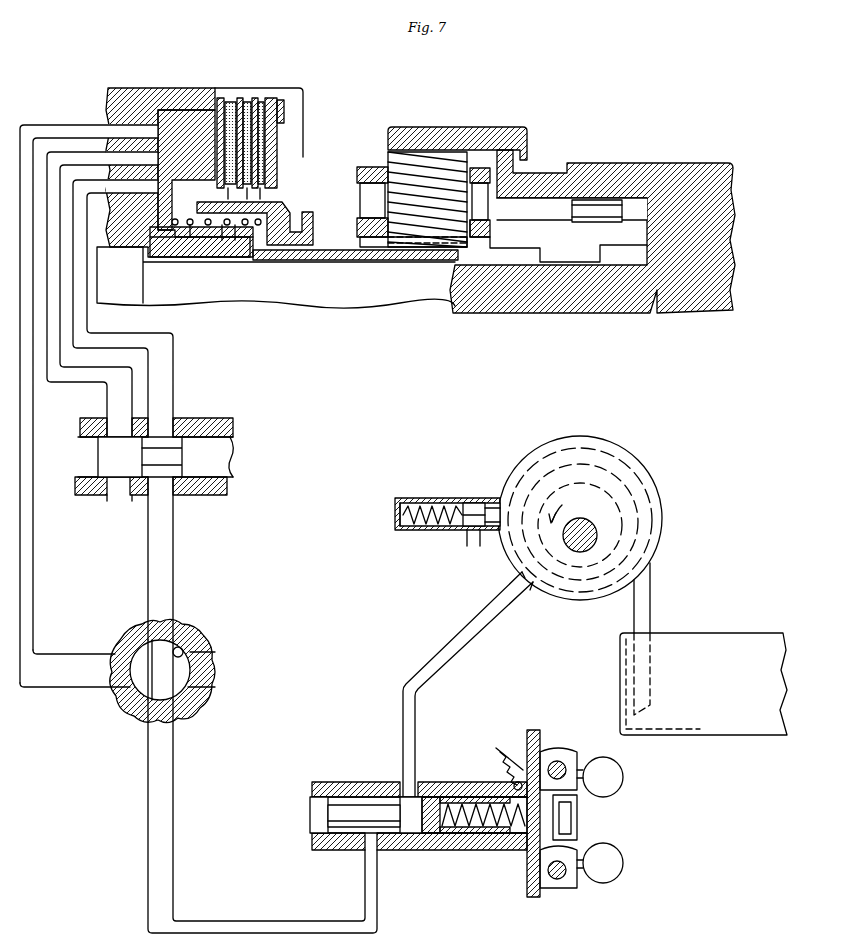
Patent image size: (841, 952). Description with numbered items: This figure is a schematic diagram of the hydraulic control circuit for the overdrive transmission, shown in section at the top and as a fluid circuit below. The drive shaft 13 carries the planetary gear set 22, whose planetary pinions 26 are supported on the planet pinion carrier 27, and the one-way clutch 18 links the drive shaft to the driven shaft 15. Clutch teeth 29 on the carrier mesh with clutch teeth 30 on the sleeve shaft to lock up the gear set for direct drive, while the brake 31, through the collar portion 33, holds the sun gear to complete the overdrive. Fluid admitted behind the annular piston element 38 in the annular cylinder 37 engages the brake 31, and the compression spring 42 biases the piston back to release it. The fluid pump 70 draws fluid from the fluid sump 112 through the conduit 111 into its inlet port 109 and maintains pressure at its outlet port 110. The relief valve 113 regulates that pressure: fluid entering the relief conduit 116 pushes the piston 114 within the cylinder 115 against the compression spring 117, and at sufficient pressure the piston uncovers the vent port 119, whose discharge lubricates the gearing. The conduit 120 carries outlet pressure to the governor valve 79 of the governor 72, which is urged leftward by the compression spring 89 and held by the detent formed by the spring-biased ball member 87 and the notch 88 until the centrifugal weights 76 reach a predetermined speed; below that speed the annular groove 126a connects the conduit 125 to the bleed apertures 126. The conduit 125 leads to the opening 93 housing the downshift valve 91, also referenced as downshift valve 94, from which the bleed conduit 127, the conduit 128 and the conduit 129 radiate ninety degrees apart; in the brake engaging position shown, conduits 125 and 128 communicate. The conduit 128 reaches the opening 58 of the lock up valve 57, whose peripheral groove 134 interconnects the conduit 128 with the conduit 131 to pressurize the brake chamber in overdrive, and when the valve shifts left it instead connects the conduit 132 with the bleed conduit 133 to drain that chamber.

The drive shaft 13 is at (265, 305).
The driven shaft 15 is at (710, 255).
The one-way clutch 18 is at (632, 213).
The planetary gear set 22 is at (372, 150).
The planetary pinions 26 is at (432, 248).
The planet pinion carrier 27 is at (365, 166).
The clutch teeth 29 is at (368, 252).
The clutch teeth 30 is at (325, 262).
The brake 31 is at (245, 88).
The collar portion 33 is at (280, 206).
The annular cylinder 37 is at (190, 105).
The annular piston element 38 is at (196, 105).
The compression spring 42 is at (190, 240).
The lock up valve 57 is at (245, 458).
The opening 58 is at (93, 438).
The fluid pump 70 is at (662, 484).
The governor 72 is at (597, 820).
The centrifugal weights 76 is at (615, 872).
The governor valve 79 is at (306, 818).
The spring-biased ball member 87 is at (500, 775).
The notch 88 is at (516, 840).
The compression spring 89 is at (455, 838).
The downshift valve 91 is at (120, 705).
The opening 93 is at (192, 658).
The downshift valve 94 is at (178, 648).
The inlet port 109 is at (655, 578).
The outlet port 110 is at (524, 588).
The conduit 111 is at (648, 608).
The fluid sump 112 is at (751, 636).
The relief valve 113 is at (427, 489).
The piston 114 is at (472, 506).
The cylinder 115 is at (430, 527).
The relief conduit 116 is at (492, 506).
The compression spring 117 is at (398, 515).
The vent port 119 is at (472, 548).
The conduit 120 is at (424, 680).
The conduit 125 is at (164, 786).
The bleed apertures 126 is at (335, 848).
The annular groove 126a is at (373, 805).
The bleed conduit 127 is at (210, 668).
The conduit 128 is at (163, 532).
The conduit 129 is at (126, 655).
The conduit 131 is at (170, 418).
The conduit 132 is at (118, 427).
The bleed conduit 133 is at (118, 488).
The peripheral groove 134 is at (163, 478).